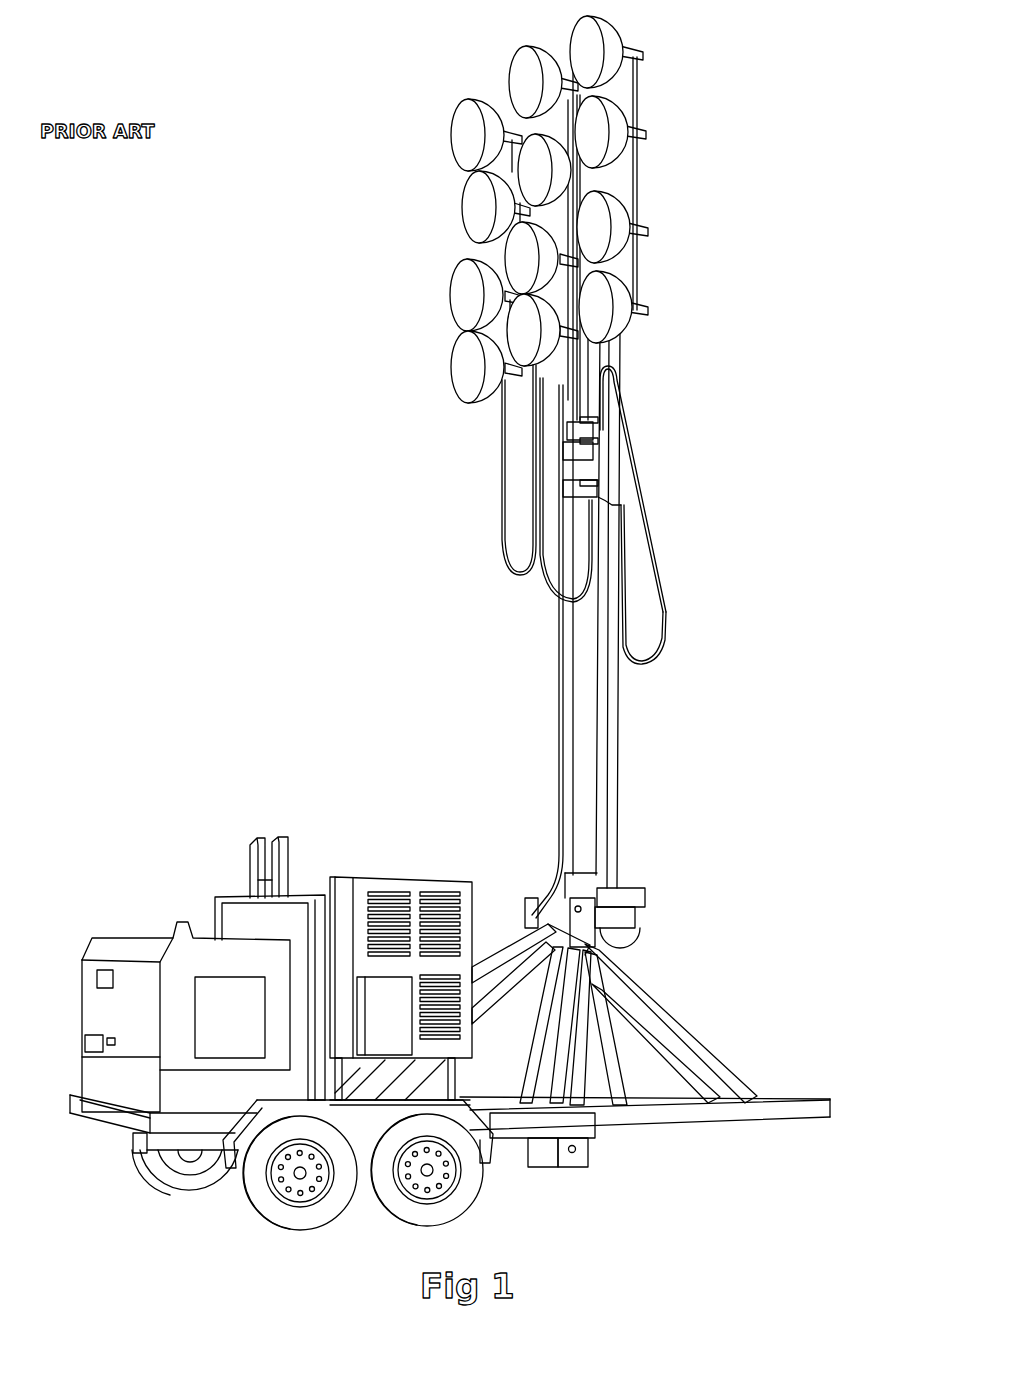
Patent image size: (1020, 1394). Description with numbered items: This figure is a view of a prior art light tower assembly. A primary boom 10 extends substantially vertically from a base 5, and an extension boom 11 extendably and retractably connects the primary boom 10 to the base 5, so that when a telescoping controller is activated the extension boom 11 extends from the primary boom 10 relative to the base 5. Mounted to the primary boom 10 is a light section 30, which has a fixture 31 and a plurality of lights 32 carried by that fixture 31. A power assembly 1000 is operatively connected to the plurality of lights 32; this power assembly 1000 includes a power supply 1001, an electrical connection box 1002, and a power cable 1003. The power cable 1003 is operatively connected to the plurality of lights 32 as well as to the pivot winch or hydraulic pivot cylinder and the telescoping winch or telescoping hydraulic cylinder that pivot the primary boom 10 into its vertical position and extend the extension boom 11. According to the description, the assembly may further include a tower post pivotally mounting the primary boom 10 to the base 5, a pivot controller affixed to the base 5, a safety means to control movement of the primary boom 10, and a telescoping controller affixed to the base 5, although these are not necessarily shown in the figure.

The base 5 is at (650, 835).
The primary boom 10 is at (596, 371).
The extension boom 11 is at (592, 423).
The light section 30 is at (400, 238).
The fixture 31 is at (642, 90).
The lights 32 is at (523, 250).
The power assembly 1000 is at (450, 957).
The power supply 1001 is at (203, 965).
The electrical connection box 1002 is at (413, 908).
The power cable 1003 is at (557, 755).